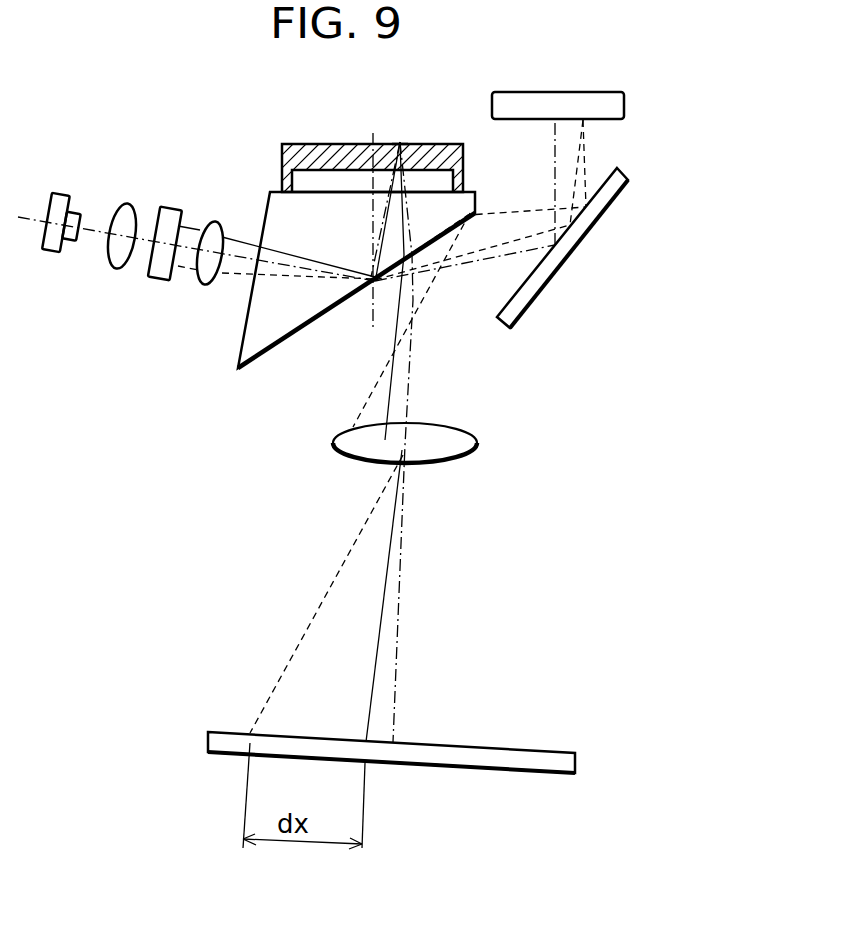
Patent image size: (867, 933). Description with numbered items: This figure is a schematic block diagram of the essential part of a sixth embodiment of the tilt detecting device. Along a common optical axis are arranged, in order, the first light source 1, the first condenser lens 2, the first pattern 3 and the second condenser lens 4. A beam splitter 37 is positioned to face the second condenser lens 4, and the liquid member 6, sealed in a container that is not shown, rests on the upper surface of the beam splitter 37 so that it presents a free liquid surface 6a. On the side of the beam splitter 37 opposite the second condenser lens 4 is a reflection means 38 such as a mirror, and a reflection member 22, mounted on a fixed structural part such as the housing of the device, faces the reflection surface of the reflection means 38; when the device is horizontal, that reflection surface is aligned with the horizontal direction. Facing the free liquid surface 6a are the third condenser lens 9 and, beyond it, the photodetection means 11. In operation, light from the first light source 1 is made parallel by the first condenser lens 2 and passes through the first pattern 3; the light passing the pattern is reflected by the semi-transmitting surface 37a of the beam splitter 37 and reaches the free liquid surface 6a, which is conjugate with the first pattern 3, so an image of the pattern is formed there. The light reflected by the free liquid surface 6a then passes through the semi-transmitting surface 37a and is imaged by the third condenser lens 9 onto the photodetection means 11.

The first light source 1 is at (66, 190).
The first condenser lens 2 is at (128, 203).
The first pattern 3 is at (172, 205).
The second condenser lens 4 is at (212, 220).
The liquid member 6 is at (336, 145).
The free liquid surface 6a is at (430, 145).
The third condenser lens 9 is at (472, 440).
The photodetection means 11 is at (520, 748).
The reflection member 22 is at (624, 107).
The beam splitter 37 is at (267, 305).
The semi-transmitting surface 37a is at (317, 320).
The reflection means 38 is at (617, 202).